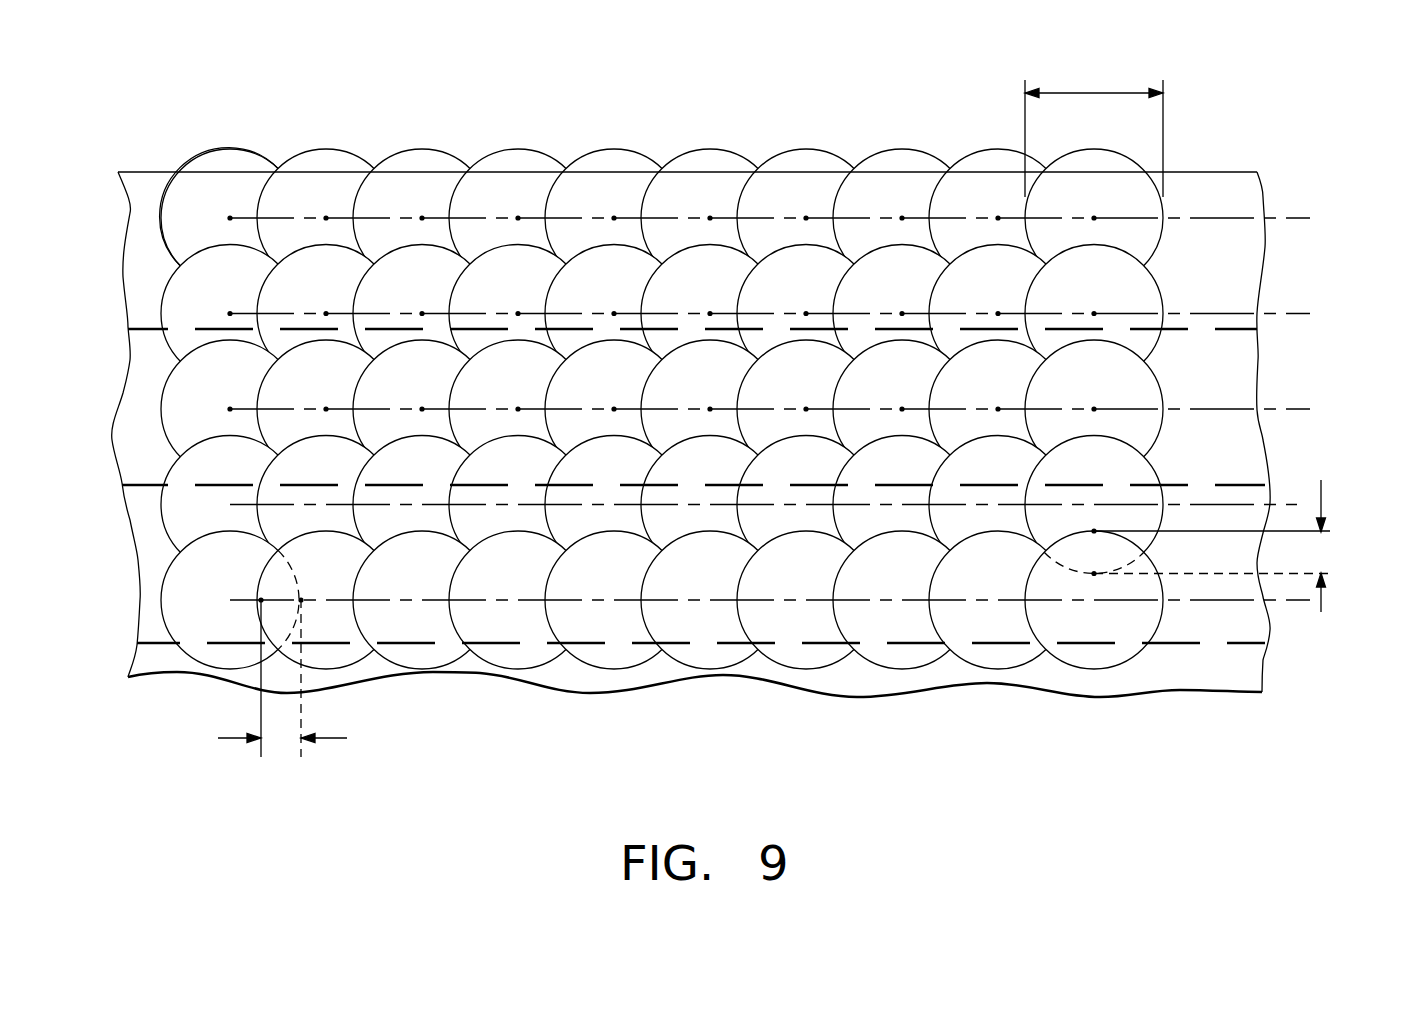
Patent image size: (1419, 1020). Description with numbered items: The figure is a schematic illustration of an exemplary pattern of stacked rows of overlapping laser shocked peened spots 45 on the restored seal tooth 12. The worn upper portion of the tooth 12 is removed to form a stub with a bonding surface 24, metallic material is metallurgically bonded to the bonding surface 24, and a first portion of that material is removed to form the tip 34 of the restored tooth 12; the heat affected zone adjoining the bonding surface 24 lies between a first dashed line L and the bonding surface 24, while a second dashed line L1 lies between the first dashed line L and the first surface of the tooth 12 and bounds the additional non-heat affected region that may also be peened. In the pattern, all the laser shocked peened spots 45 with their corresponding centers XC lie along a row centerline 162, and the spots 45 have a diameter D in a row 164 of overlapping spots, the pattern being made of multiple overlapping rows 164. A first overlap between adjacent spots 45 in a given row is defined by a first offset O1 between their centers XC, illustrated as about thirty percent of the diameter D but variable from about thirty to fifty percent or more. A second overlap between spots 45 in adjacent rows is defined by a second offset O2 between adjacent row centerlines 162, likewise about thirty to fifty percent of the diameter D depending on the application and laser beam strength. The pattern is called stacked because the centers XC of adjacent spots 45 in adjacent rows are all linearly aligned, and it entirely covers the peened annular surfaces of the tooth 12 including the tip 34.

The tooth 12 is at (922, 718).
The bonding surface 24 is at (1233, 330).
The tip 34 is at (1208, 185).
The laser shocked peened spots 45 is at (226, 148).
The row centerline 162 is at (1290, 214).
The row of overlapping laser shock peened spots 164 is at (150, 206).
The centers XC is at (420, 216).
The diameter D is at (1085, 93).
The first dashed line L is at (147, 482).
The second dashed line L1 is at (147, 623).
The first offset O1 is at (340, 738).
The second offset O2 is at (1322, 493).